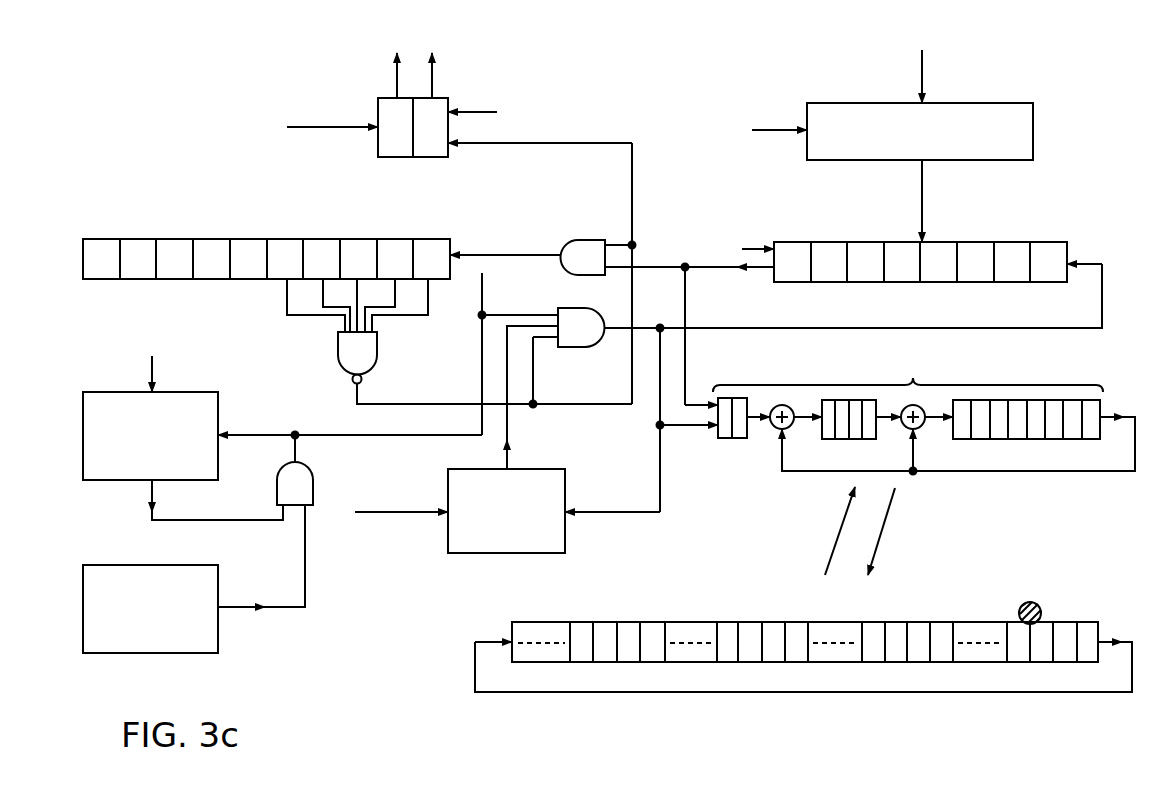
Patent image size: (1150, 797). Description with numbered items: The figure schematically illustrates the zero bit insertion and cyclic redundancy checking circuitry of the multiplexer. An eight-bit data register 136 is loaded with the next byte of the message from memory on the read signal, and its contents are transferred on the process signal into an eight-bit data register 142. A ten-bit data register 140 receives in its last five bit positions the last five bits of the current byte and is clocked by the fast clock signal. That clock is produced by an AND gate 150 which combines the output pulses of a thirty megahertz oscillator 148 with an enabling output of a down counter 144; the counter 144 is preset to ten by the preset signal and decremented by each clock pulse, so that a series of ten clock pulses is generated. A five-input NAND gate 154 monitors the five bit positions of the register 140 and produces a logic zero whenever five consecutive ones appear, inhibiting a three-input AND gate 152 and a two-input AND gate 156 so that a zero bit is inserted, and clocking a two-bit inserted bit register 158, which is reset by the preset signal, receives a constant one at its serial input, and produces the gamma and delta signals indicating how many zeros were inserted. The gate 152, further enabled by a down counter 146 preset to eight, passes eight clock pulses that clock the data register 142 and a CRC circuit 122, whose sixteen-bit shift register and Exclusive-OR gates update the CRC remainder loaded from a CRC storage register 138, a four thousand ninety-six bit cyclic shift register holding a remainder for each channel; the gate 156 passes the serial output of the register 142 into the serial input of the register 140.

The CRC circuit 122 is at (924, 465).
The 8-bit data register 136 is at (878, 135).
The CRC storage register 138 is at (803, 637).
The 10-bit data register 140 is at (246, 266).
The 8-bit data register 142 is at (892, 259).
The down counter 144 is at (247, 427).
The down counter 146 is at (507, 442).
The 30 MHz oscillator 148 is at (135, 609).
The AND gate 150 is at (322, 521).
The three-input AND gate 152 is at (791, 388).
The five-input NAND gate 154 is at (459, 341).
The two-input AND gate 156 is at (593, 309).
The inserted bit register 158 is at (423, 214).